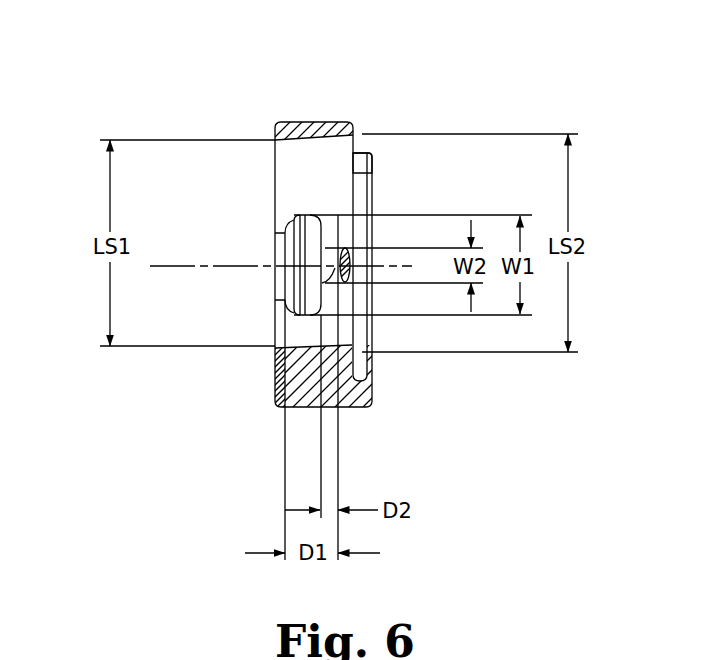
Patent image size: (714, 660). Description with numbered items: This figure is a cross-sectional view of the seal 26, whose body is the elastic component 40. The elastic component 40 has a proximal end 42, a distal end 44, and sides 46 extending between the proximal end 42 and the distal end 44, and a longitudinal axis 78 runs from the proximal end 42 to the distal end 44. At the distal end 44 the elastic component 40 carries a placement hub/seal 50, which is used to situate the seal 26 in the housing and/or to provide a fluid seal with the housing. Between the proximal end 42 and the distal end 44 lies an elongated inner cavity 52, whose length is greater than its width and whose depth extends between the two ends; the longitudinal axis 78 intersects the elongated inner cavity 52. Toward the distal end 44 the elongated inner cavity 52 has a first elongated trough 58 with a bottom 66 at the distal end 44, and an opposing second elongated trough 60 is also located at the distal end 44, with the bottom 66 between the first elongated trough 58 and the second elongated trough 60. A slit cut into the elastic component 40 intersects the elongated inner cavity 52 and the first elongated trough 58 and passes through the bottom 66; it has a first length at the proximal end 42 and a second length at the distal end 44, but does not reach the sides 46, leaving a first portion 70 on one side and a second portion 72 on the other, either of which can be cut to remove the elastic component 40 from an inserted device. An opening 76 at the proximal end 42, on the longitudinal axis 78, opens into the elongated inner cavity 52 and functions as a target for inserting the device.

The seal 26 is at (487, 74).
The elastic component 40 is at (318, 120).
The proximal end 42 is at (272, 120).
The distal end 44 is at (356, 119).
The sides 46 is at (348, 117).
The placement hub/seal 50 is at (373, 158).
The elongated inner cavity 52 is at (287, 230).
The first elongated trough 58 is at (323, 262).
The second elongated trough 60 is at (354, 276).
The bottom 66 is at (325, 245).
The first portion 70 is at (295, 120).
The second portion 72 is at (275, 391).
The opening 76 is at (268, 235).
The longitudinal axis 78 is at (176, 265).